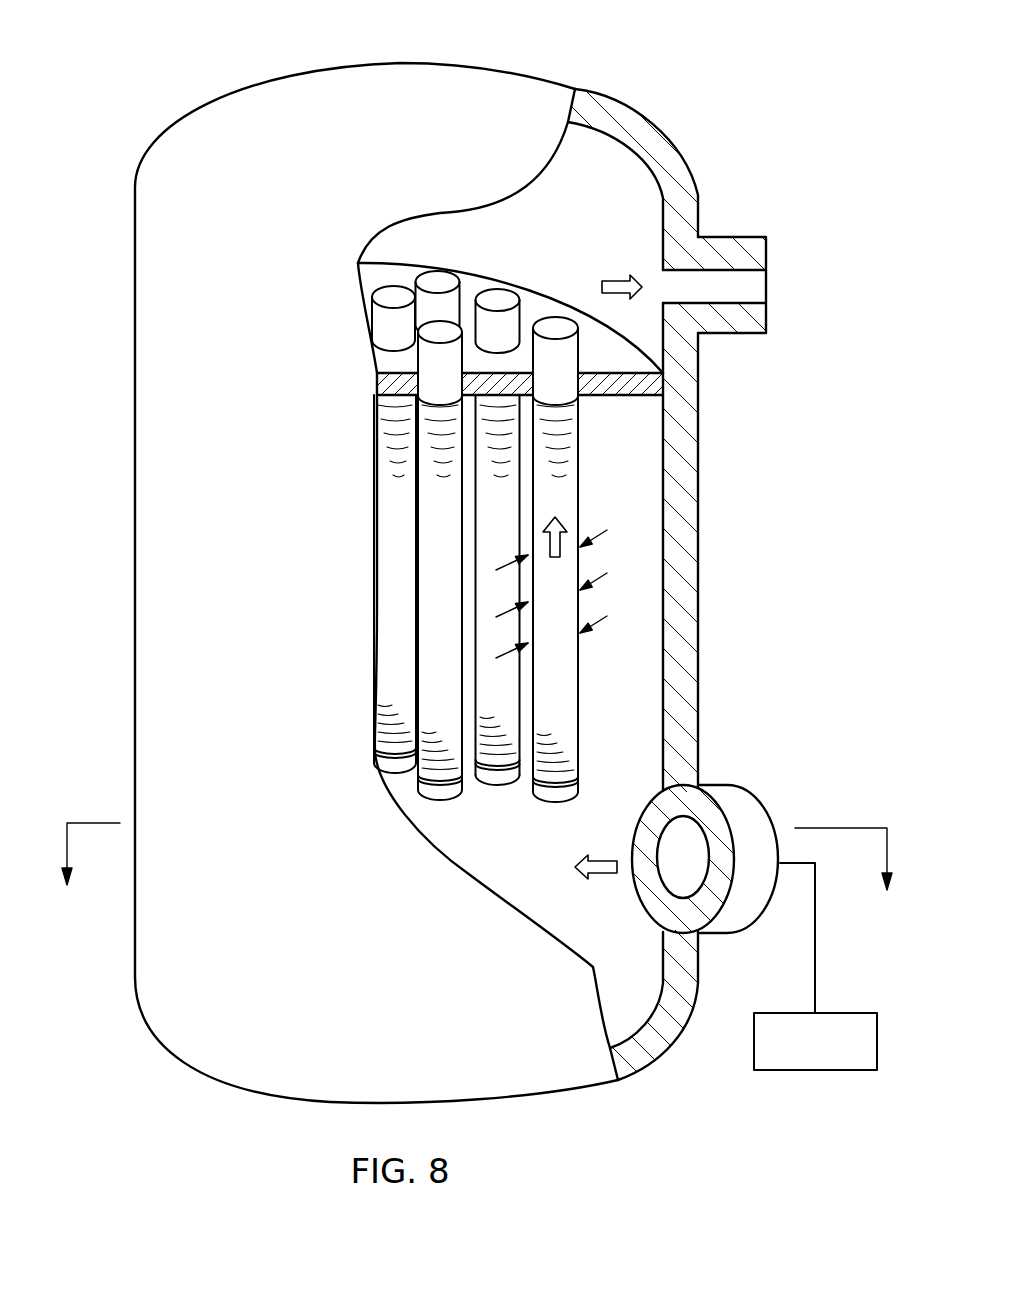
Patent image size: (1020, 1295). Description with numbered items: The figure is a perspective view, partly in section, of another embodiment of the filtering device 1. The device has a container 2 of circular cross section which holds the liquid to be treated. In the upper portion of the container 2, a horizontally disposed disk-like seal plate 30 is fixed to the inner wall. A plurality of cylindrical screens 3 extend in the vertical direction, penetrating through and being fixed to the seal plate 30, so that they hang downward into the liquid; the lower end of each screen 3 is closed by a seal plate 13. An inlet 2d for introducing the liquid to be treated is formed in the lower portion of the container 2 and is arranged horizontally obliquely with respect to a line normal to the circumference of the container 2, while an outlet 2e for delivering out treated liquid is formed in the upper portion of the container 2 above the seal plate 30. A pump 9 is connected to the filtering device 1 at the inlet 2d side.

The filtering device 1 is at (668, 108).
The container 2 is at (685, 534).
The outlet 2e is at (733, 290).
The inlet 2d is at (750, 813).
The seal plate 30 is at (603, 355).
The screen 3 is at (563, 413).
The seal plate 13 is at (433, 795).
The pump 9 is at (842, 1013).